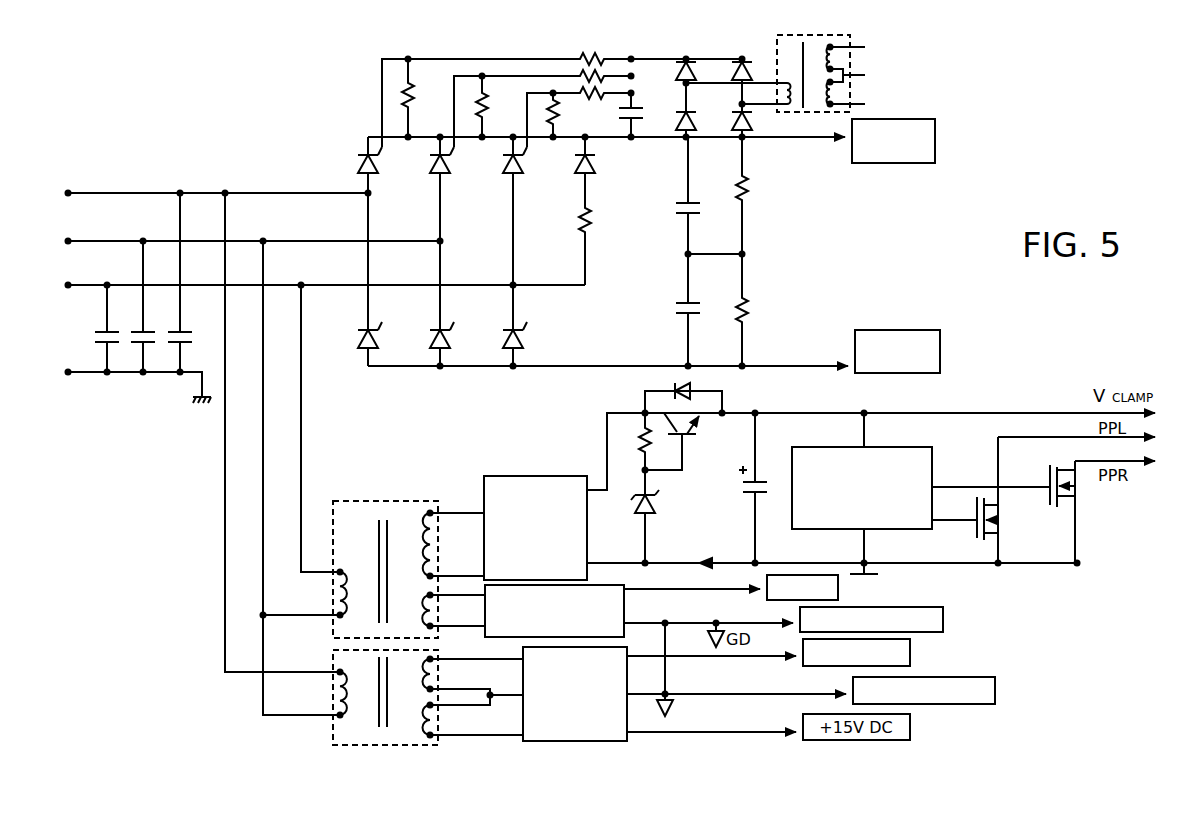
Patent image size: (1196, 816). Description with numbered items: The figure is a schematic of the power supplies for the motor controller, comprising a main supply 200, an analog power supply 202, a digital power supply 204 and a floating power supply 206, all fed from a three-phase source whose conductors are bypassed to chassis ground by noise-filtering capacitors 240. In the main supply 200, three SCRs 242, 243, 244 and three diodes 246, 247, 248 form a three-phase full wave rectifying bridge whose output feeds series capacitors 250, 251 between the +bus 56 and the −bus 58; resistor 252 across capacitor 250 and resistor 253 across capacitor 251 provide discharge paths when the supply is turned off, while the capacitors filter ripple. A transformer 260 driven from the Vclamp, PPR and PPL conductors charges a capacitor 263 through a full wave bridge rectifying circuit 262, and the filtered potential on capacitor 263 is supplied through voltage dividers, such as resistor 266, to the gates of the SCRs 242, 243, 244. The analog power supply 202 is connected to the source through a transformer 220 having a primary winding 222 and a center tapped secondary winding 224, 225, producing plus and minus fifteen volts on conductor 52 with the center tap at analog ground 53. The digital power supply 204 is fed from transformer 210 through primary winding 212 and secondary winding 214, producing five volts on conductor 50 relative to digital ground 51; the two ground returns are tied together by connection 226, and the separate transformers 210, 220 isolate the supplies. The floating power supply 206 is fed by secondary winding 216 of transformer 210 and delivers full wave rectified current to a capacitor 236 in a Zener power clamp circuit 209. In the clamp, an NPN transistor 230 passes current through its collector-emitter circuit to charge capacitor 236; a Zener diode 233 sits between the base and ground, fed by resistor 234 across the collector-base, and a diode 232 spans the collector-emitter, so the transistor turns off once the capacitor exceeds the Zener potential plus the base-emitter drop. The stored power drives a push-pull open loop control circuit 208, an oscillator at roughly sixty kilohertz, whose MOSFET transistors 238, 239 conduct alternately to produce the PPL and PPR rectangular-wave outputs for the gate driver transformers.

The conductor 50 is at (838, 588).
The digital ground 51 is at (943, 622).
The conductor 52 is at (910, 652).
The analog ground 53 is at (995, 690).
The +bus 56 is at (935, 130).
The −bus 58 is at (858, 342).
The main supply 200 is at (660, 204).
The analog power supply 202 is at (591, 742).
The digital power supply 204 is at (627, 611).
The floating power supply 206 is at (513, 462).
The push-pull open loop control circuit 208 is at (966, 443).
The clamp circuit 209 is at (687, 465).
The transformer 210 is at (409, 552).
The primary winding 212 is at (342, 572).
The secondary winding 214 is at (434, 618).
The secondary winding 216 is at (434, 535).
The transformer 220 is at (428, 712).
The primary winding 222 is at (360, 698).
The center tapped secondary winding 224 is at (434, 719).
The center tapped secondary winding 225 is at (434, 685).
The connection 226 is at (667, 682).
The NPN transistor 230 is at (687, 437).
The diode 232 is at (691, 391).
The Zener diode 233 is at (650, 515).
The resistor 234 is at (638, 428).
The capacitor 236 is at (745, 488).
The MOSFET transistor 238 is at (977, 532).
The MOSFET transistor 239 is at (1065, 498).
The capacitors 240 is at (105, 330).
The SCR 242 is at (374, 172).
The SCR 243 is at (447, 172).
The SCR 244 is at (521, 172).
The diode 246 is at (375, 340).
The diode 247 is at (449, 340).
The diode 248 is at (524, 340).
The capacitor 250 is at (684, 210).
The capacitor 251 is at (684, 310).
The resistor 252 is at (746, 187).
The resistor 253 is at (746, 310).
The transformer 260 is at (813, 116).
The full wave bridge rectifying circuit 262 is at (678, 105).
The capacitor 263 is at (626, 106).
The resistor 266 is at (412, 98).